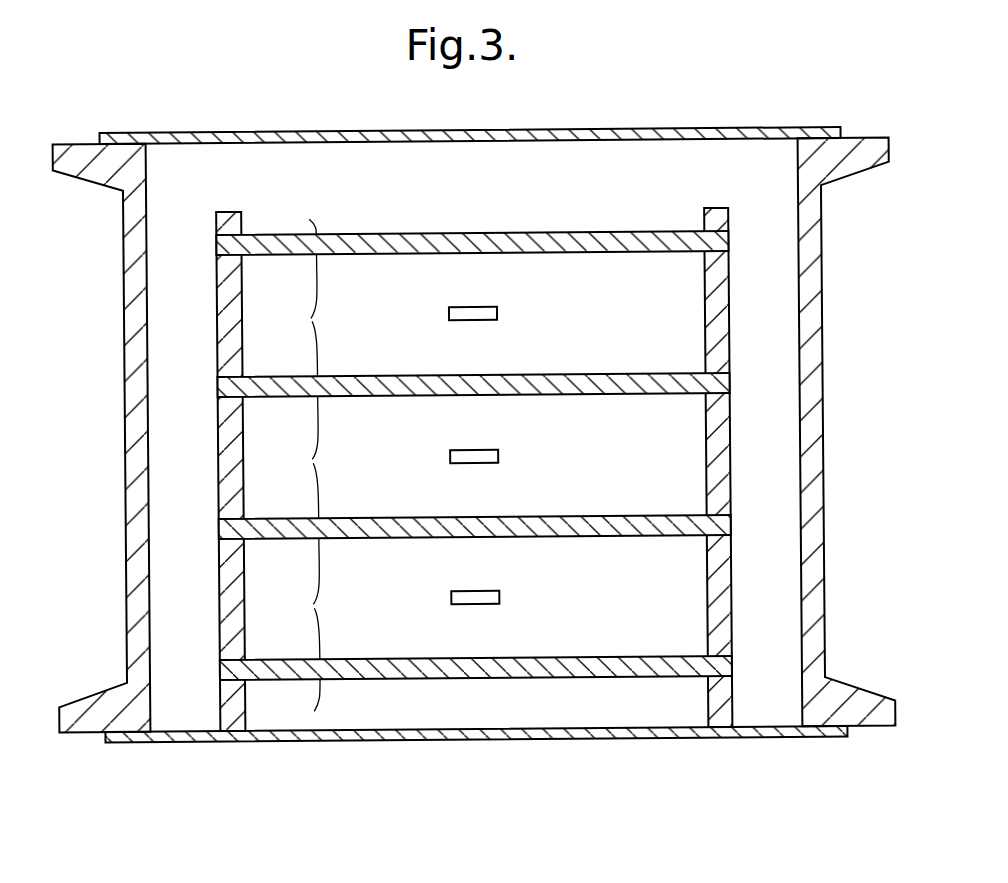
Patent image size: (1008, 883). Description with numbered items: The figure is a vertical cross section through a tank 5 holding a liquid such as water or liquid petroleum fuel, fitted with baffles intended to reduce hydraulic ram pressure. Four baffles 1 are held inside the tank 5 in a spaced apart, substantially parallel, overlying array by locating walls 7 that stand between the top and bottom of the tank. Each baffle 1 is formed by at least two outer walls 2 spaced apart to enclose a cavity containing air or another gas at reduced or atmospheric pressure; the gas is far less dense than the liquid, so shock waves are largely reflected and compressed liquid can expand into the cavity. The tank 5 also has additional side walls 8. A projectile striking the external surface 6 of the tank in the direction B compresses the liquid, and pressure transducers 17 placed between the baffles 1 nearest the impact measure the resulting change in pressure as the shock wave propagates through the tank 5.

The baffle 1 is at (633, 229).
The outer wall 2 is at (305, 462).
The tank 5 is at (618, 125).
The external surface 6 is at (377, 130).
The locating wall 7 is at (219, 460).
The side wall 8 is at (125, 528).
The pressure transducer 17 is at (478, 307).
The direction of projectile impact B is at (474, 82).